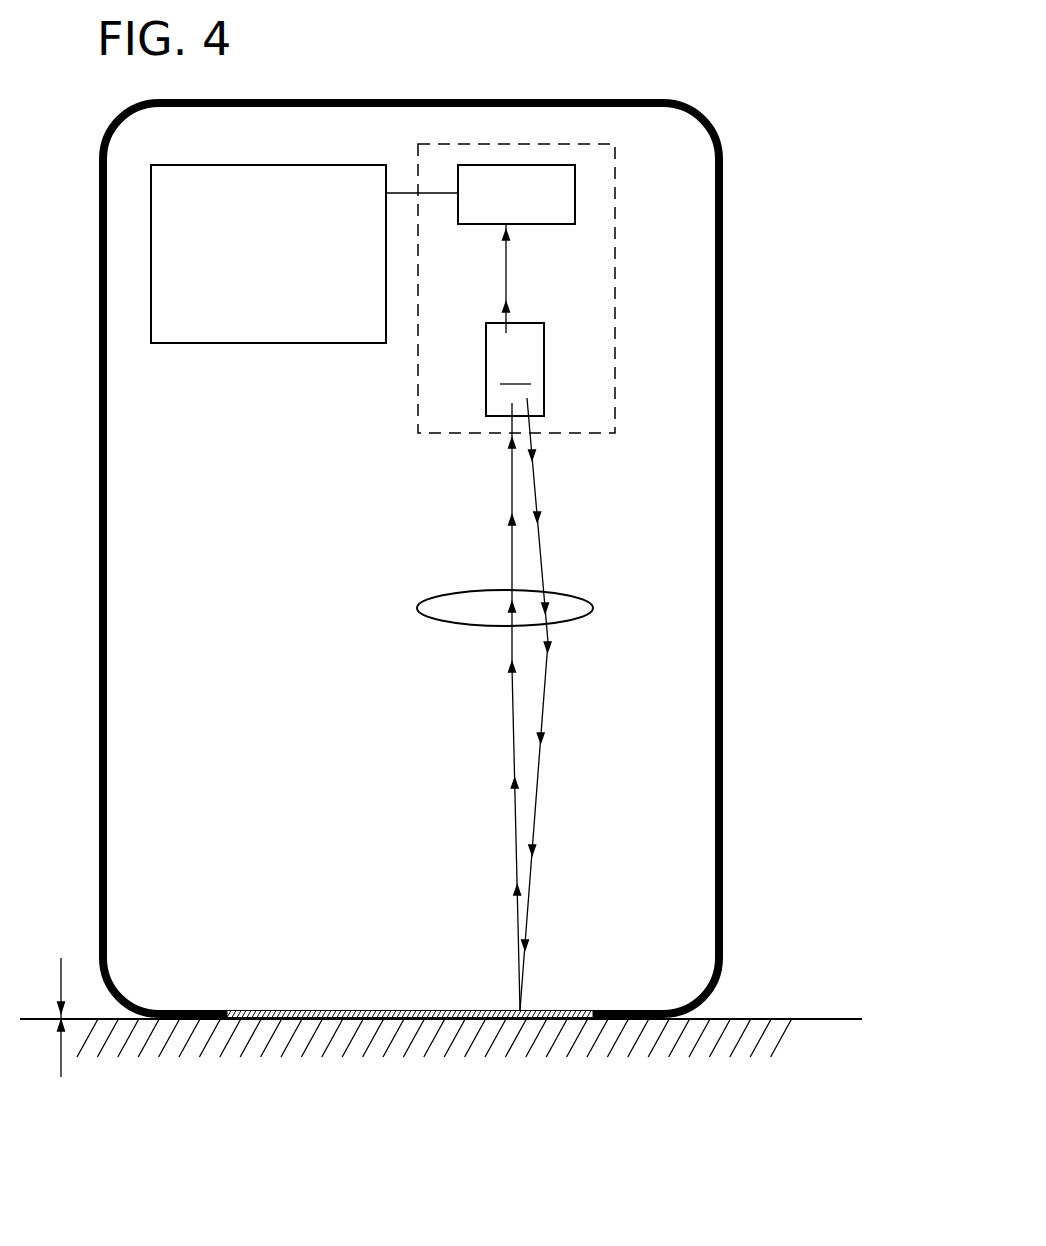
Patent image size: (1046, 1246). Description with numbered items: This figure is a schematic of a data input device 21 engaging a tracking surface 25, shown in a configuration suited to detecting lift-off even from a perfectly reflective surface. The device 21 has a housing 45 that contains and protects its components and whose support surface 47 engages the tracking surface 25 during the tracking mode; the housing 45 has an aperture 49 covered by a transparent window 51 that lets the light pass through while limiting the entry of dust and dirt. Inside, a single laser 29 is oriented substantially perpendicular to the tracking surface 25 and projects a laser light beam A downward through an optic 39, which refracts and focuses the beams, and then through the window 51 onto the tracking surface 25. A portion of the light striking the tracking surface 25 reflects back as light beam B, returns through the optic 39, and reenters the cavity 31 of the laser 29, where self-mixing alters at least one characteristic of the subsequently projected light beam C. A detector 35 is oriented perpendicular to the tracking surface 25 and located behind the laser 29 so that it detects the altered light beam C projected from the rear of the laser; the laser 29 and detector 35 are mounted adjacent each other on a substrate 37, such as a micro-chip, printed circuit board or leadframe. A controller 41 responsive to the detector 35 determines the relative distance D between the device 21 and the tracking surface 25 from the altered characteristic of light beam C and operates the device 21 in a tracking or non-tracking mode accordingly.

The data input device 21 is at (760, 421).
The tracking surface 25 is at (845, 1018).
The laser 29 is at (576, 369).
The cavity 31 is at (545, 363).
The detector 35 is at (516, 194).
The substrate 37 is at (418, 400).
The optic 39 is at (581, 597).
The controller 41 is at (304, 254).
The housing 45 is at (722, 541).
The support surface 47 is at (636, 1021).
The aperture 49 is at (592, 1010).
The transparent window 51 is at (336, 1010).
The laser light beam A is at (545, 688).
The reflected light beam B is at (513, 695).
The projected light beam C is at (506, 265).
The distance D is at (51, 1017).